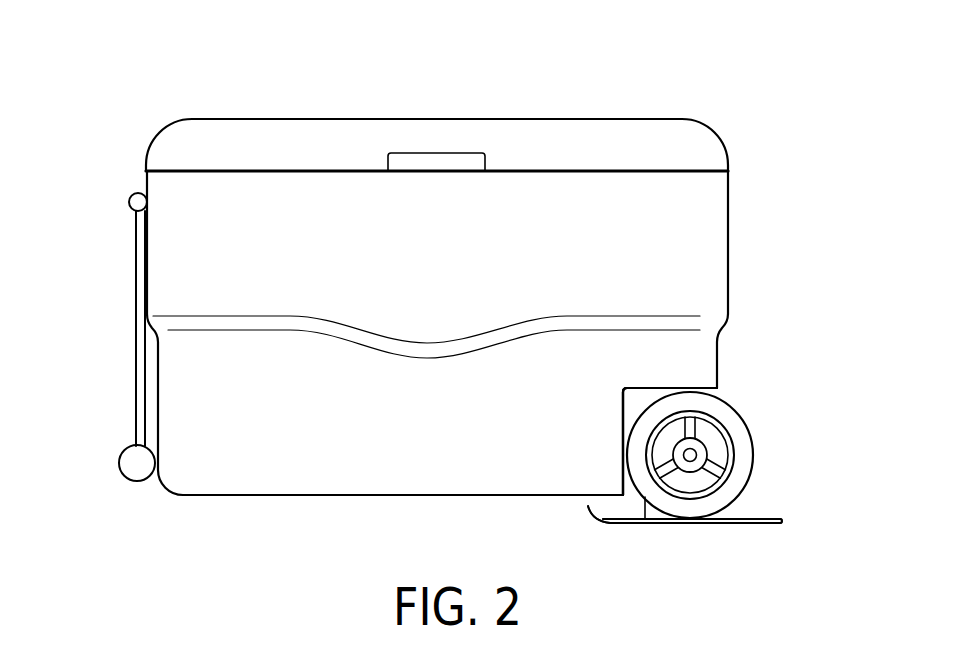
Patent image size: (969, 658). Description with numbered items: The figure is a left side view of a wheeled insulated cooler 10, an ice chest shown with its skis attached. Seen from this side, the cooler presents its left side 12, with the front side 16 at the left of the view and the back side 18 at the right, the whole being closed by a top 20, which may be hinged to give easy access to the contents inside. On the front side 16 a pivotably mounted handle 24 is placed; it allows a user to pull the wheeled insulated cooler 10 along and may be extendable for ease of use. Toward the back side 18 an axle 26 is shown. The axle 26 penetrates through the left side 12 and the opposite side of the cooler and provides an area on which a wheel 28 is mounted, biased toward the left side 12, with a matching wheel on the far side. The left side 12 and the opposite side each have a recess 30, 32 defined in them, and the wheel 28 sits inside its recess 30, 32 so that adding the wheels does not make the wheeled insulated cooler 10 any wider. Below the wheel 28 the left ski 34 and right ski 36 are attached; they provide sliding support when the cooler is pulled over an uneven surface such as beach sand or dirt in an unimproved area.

The wheeled insulated cooler 10 is at (112, 108).
The left side 12 is at (710, 200).
The front side 16 is at (145, 250).
The back side 18 is at (728, 249).
The top 20 is at (680, 118).
The handle 24 is at (136, 396).
The axle 26 is at (690, 460).
The wheel 28 is at (753, 456).
The left recess 30 is at (670, 441).
The right recess 32 is at (637, 407).
The left ski 34 is at (750, 525).
The right ski 36 is at (685, 514).